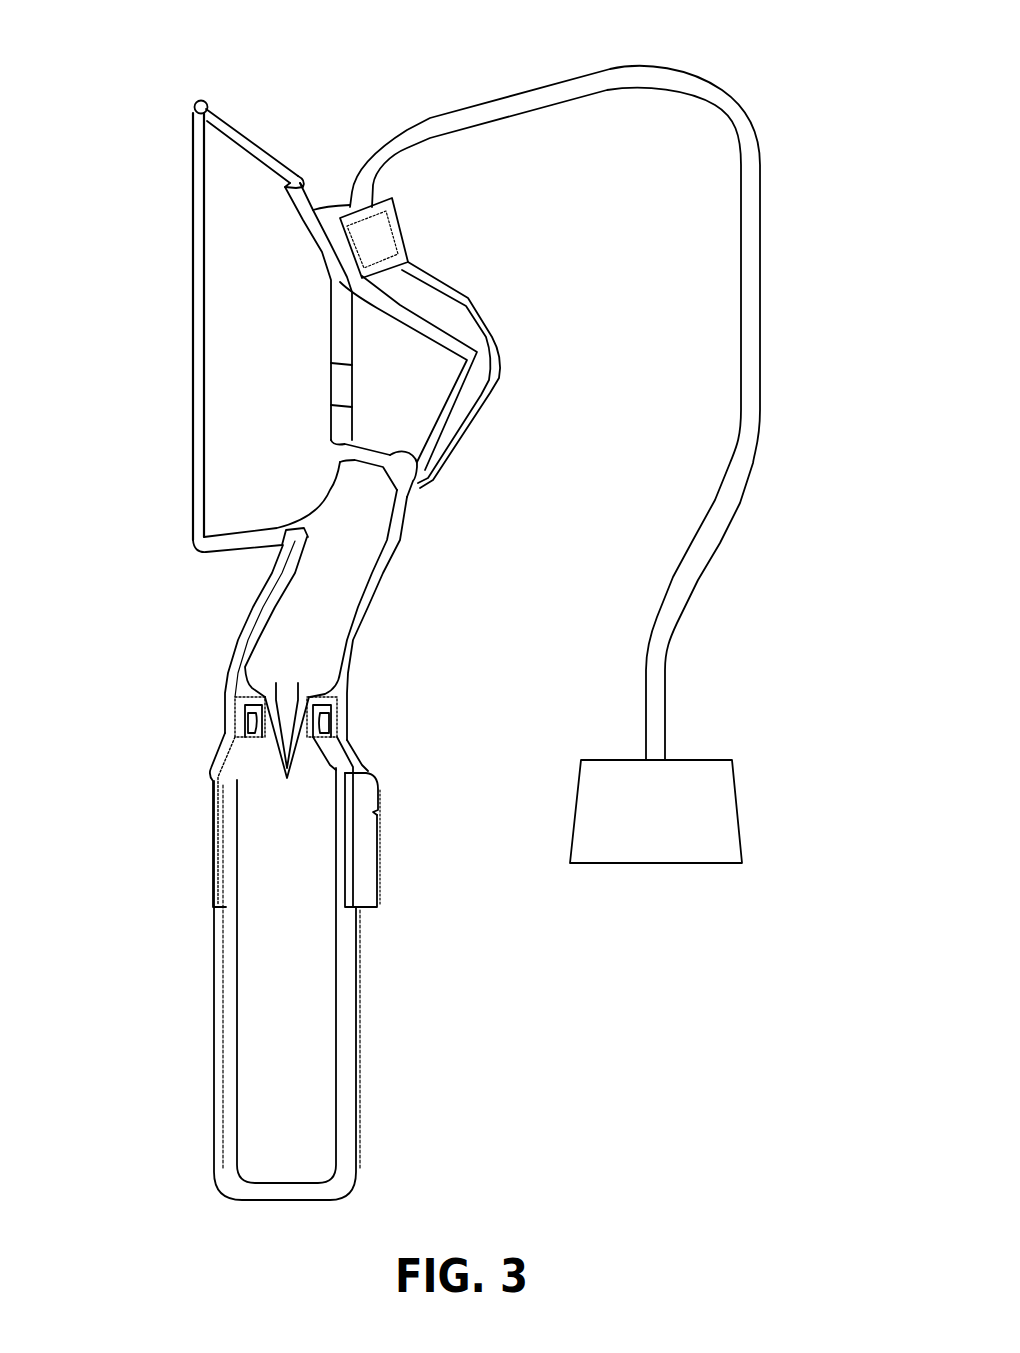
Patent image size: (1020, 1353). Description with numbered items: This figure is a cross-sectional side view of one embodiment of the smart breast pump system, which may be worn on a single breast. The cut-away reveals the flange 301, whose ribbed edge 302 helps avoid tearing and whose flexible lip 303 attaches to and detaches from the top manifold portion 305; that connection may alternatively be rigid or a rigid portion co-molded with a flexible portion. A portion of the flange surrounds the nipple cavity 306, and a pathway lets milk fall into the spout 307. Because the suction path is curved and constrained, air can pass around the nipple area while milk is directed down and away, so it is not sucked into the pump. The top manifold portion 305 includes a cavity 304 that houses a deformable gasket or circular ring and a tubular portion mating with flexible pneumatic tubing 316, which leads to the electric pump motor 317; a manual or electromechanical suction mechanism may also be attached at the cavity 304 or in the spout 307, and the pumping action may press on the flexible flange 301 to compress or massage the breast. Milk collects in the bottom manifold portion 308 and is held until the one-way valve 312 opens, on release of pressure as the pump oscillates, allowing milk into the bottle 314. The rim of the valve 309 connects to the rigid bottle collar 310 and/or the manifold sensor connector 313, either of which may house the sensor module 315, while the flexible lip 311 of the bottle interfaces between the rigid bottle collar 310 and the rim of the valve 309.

The flange 301 is at (218, 280).
The ribbed edge 302 is at (210, 104).
The flexible lip 303 is at (308, 164).
The cavity 304 is at (386, 243).
The top manifold portion 305 is at (468, 297).
The nipple cavity 306 is at (420, 400).
The spout 307 is at (398, 484).
The bottom manifold portion 308 is at (266, 674).
The rim of the valve 309 is at (242, 706).
The bottle collar 310 is at (244, 735).
The flexible lip 311 is at (330, 713).
The one-way valve 312 is at (293, 777).
The manifold sensor connector 313 is at (380, 800).
The bottle 314 is at (257, 837).
The sensor module 315 is at (372, 872).
The flexible pneumatic tubing 316 is at (616, 70).
The electric pump motor 317 is at (711, 775).